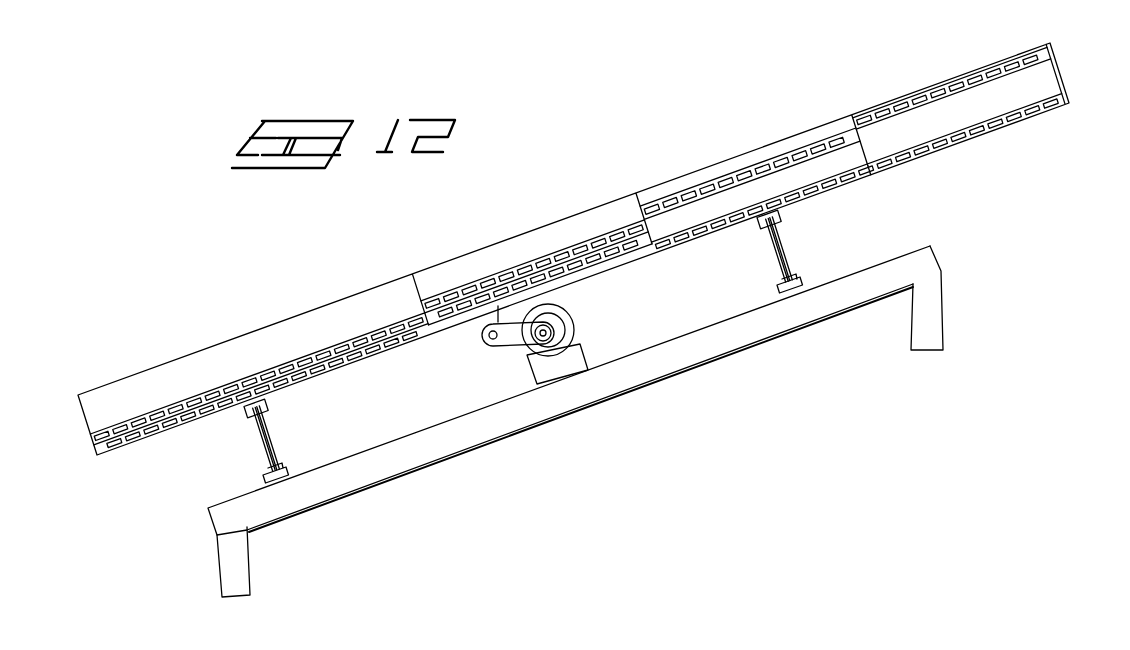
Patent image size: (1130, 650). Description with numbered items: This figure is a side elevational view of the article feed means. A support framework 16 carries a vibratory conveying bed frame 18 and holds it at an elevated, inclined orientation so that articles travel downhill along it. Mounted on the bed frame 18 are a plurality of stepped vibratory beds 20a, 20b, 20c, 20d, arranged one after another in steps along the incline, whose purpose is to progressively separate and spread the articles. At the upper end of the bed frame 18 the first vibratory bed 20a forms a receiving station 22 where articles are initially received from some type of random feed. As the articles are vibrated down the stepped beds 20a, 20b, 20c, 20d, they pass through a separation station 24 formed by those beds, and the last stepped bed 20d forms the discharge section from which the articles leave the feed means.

The support framework 16 is at (933, 322).
The vibratory conveying bed frame 18 is at (878, 170).
The stepped vibratory bed 20a is at (960, 84).
The stepped vibratory bed 20b is at (712, 187).
The stepped vibratory bed 20c is at (600, 258).
The stepped vibratory bed 20d is at (353, 357).
The receiving station 22 is at (1040, 94).
The separation station 24 is at (688, 246).